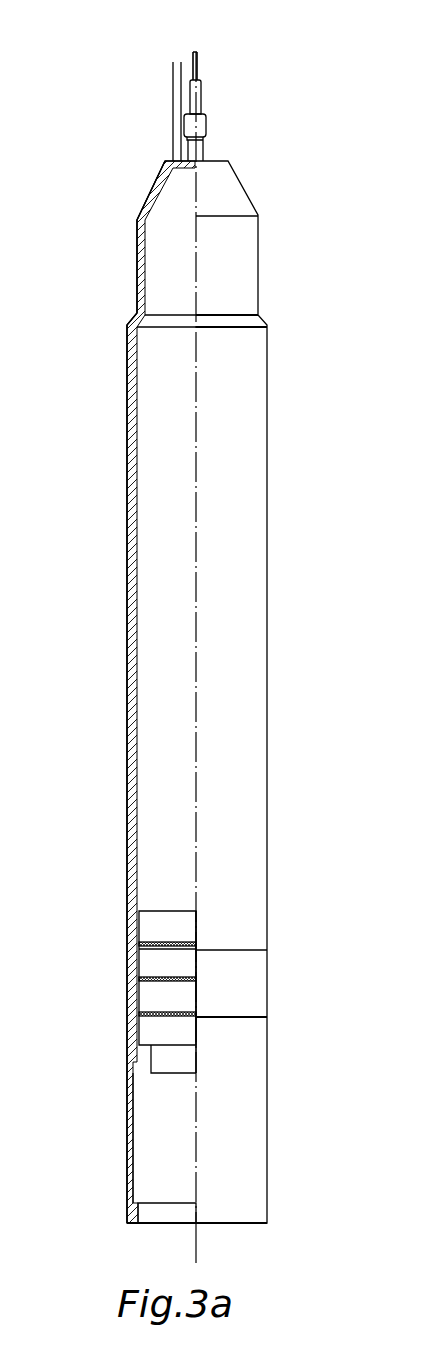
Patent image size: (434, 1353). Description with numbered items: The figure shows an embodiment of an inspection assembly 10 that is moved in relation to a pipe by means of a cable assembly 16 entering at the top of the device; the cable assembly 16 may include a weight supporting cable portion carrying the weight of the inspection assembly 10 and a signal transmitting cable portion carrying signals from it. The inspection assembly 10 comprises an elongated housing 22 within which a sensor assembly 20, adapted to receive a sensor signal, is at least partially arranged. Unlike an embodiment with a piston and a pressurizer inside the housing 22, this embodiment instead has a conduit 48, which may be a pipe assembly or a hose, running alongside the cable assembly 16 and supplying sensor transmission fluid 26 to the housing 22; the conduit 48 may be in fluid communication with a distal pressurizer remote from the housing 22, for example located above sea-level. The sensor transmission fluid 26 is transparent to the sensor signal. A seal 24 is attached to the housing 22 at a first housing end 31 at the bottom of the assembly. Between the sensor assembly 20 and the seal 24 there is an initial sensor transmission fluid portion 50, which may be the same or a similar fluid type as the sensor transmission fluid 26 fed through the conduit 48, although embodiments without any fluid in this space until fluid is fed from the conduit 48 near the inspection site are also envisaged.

The inspection assembly 10 is at (273, 103).
The cable assembly 16 is at (210, 115).
The conduit 48 is at (170, 105).
The housing 22 is at (127, 444).
The sensor transmission fluid 26 is at (127, 558).
The sensor assembly 20 is at (157, 965).
The initial sensor transmission fluid portion 50 is at (163, 1142).
The seal 24 is at (158, 1215).
The first housing end 31 is at (237, 1235).